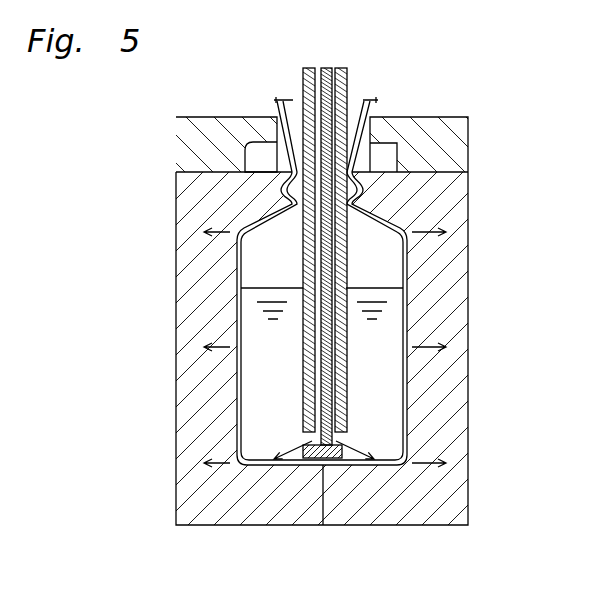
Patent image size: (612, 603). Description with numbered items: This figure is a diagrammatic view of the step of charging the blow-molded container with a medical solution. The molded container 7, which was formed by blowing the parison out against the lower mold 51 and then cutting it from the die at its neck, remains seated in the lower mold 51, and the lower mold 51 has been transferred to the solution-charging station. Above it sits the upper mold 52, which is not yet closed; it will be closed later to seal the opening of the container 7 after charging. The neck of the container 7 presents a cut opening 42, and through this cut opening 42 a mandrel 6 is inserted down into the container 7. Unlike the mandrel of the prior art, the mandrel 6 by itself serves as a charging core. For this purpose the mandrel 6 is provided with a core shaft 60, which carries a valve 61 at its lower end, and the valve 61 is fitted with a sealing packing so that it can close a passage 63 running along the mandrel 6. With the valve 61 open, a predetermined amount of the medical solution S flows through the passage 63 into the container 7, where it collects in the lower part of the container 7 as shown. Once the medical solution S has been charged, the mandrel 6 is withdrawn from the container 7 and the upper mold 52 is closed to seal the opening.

The mandrel 6 is at (348, 72).
The cut opening 42 is at (374, 103).
The upper mold 52 is at (470, 148).
The passage 63 is at (305, 265).
The molded container 7 is at (410, 283).
The core shaft 60 is at (325, 337).
The medical solution S is at (265, 363).
The lower mold 51 is at (468, 413).
The valve 61 is at (318, 450).